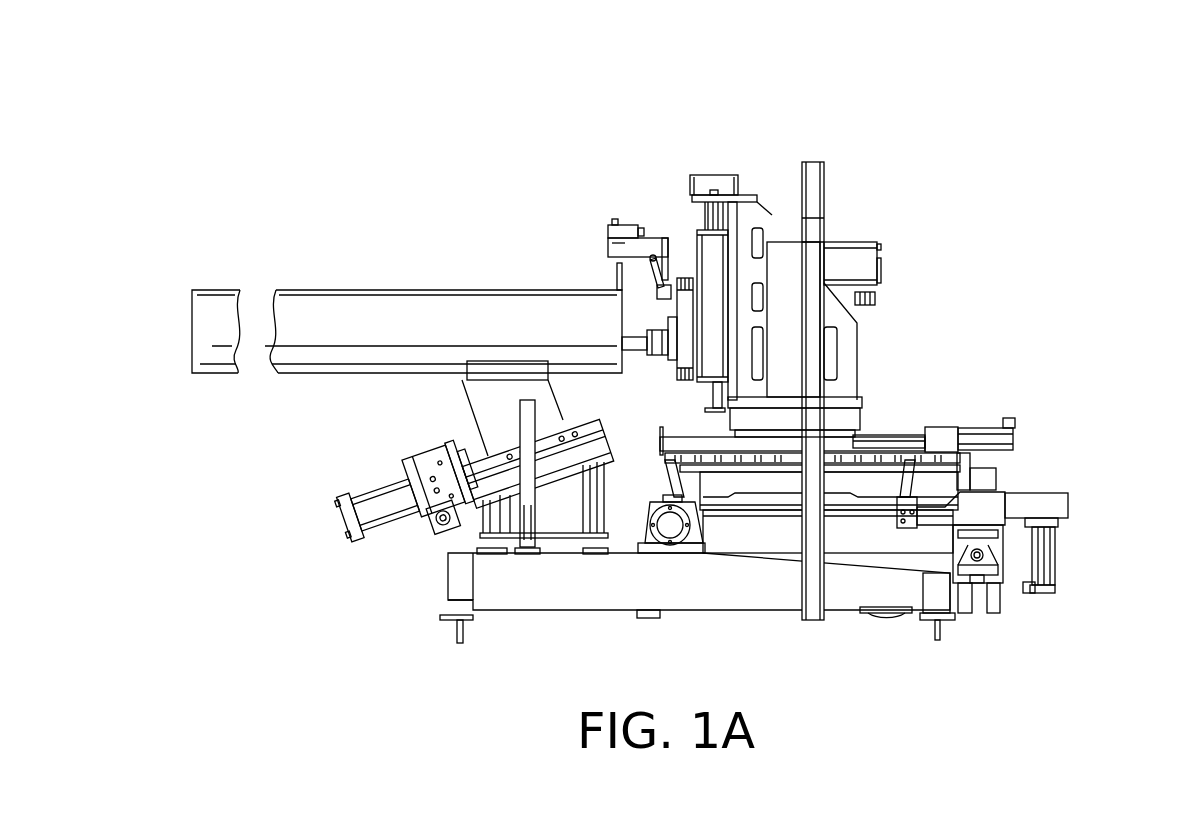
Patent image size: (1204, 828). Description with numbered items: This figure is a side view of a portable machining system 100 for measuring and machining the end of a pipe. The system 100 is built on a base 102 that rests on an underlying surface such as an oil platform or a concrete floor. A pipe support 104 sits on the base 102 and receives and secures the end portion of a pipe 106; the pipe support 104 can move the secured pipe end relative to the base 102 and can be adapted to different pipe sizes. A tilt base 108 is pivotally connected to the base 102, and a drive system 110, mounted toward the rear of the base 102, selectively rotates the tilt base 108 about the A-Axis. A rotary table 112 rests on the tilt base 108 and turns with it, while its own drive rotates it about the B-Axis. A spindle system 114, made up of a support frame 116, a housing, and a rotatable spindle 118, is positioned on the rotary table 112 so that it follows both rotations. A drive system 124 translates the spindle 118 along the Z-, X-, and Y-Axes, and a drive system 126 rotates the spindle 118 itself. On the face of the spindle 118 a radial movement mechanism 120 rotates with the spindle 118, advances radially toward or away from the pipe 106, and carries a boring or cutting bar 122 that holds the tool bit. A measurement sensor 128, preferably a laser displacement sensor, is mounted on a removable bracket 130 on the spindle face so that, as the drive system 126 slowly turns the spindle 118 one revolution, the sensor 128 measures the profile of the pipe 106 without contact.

The portable machining system 100 is at (995, 178).
The base 102 is at (605, 582).
The pipe support 104 is at (350, 468).
The pipe 106 is at (369, 288).
The tilt base 108 is at (757, 523).
The drive system 110 is at (1013, 603).
The rotary table 112 is at (845, 475).
The spindle system 114 is at (762, 148).
The support frame 116 is at (772, 243).
The spindle 118 is at (690, 285).
The radial movement mechanism 120 is at (675, 333).
The boring or cutting bar 122 is at (631, 342).
The drive system 124 is at (1025, 432).
The drive system 126 is at (880, 262).
The measurement sensor 128 is at (612, 250).
The bracket 130 is at (650, 252).